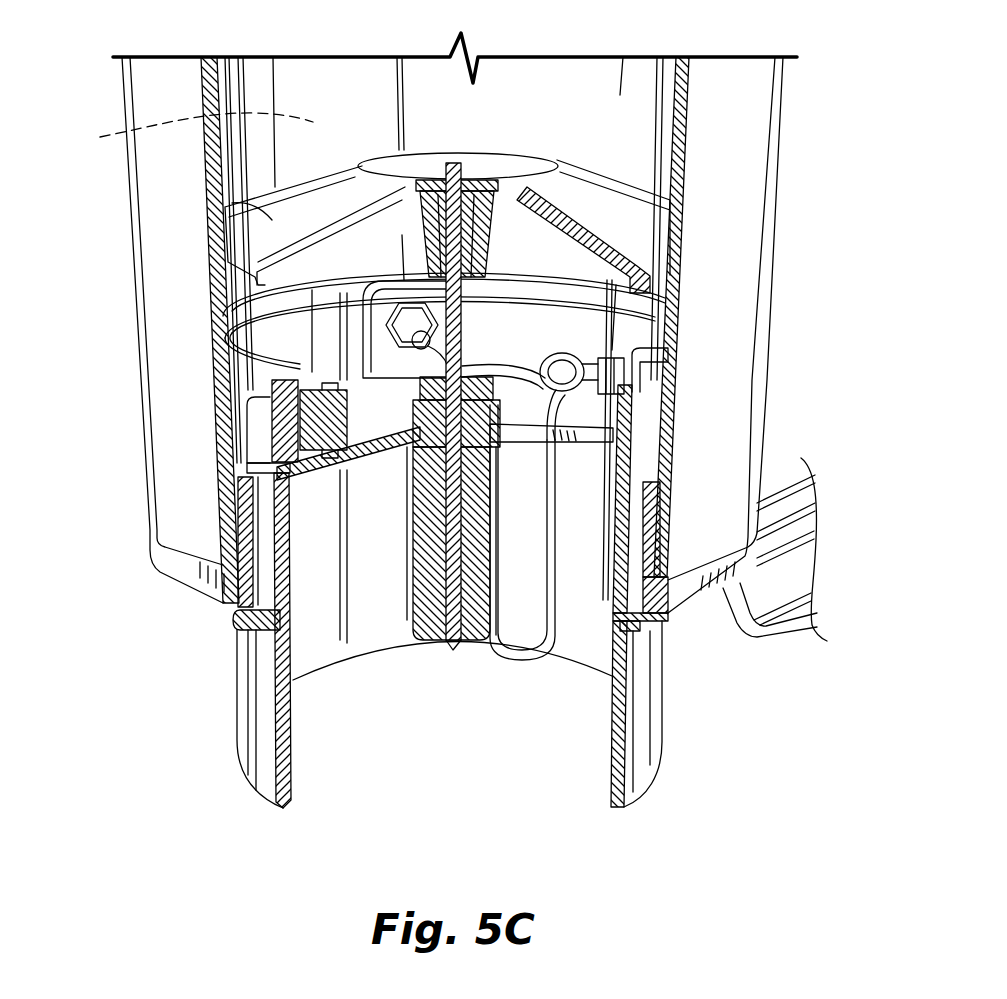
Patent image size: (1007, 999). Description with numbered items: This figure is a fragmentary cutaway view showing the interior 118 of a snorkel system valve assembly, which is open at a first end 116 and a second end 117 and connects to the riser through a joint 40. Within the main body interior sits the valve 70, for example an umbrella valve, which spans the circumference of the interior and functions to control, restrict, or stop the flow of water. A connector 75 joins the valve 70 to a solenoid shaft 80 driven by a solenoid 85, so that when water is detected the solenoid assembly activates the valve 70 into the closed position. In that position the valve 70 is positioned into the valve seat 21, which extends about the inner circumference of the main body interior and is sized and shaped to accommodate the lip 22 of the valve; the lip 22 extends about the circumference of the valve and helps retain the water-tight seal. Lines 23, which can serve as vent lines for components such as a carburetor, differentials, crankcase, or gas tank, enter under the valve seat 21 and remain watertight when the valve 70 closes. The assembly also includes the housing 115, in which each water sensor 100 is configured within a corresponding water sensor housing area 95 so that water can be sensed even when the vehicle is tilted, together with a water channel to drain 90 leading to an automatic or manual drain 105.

The valve seat 21 is at (250, 353).
The lip 22 is at (255, 288).
The lines 23 is at (600, 355).
The joint 40 is at (740, 272).
The valve 70 is at (440, 155).
The connector 75 is at (470, 200).
The solenoid shaft 80 is at (470, 302).
The solenoid 85 is at (477, 510).
The water channel to drain 90 is at (627, 560).
The water sensor housing area 95 is at (260, 424).
The water sensor 100 is at (273, 450).
The drain 105 is at (250, 615).
The housing 115 is at (253, 698).
The first end 116 is at (583, 95).
The second end 117 is at (555, 781).
The interior 118 is at (185, 130).